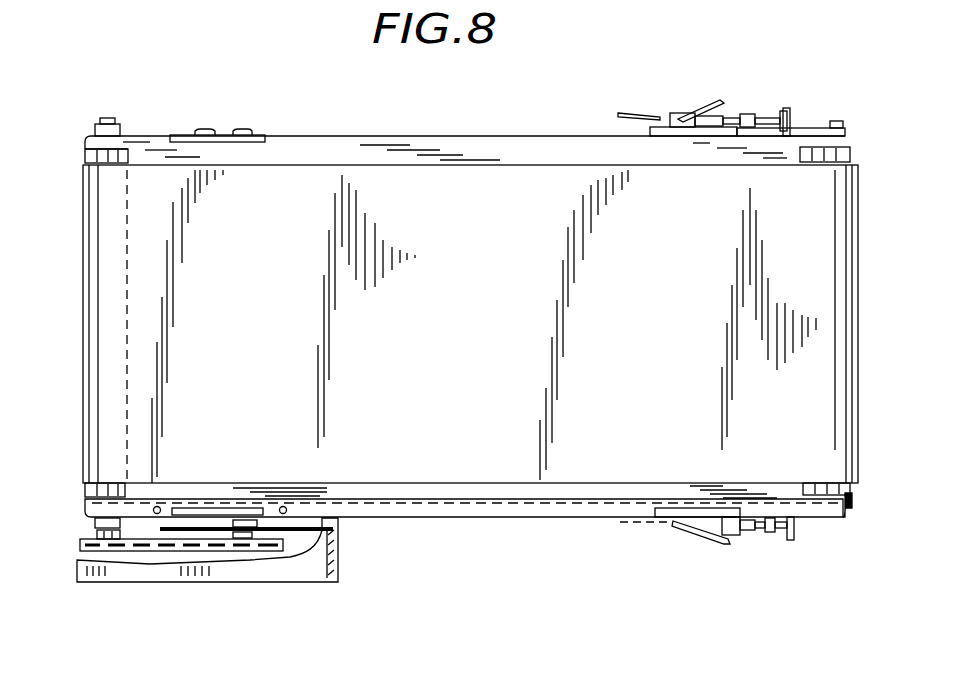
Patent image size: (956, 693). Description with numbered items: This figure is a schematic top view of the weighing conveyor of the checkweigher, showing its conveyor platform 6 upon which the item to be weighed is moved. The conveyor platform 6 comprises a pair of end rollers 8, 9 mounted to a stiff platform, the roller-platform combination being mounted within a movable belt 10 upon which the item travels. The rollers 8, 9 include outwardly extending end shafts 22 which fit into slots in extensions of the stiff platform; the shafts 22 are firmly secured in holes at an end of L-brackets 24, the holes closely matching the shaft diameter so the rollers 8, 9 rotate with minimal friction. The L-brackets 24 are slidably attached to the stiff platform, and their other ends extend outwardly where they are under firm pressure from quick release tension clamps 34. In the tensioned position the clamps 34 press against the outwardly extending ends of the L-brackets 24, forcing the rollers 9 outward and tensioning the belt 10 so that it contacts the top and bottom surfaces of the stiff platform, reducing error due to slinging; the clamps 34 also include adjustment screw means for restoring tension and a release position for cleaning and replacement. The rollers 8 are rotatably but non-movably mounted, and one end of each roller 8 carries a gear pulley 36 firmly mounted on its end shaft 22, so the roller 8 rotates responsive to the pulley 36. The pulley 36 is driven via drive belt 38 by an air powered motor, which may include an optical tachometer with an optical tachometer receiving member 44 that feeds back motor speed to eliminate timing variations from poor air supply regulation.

The conveyor platform 6 is at (549, 112).
The end roller 8 is at (76, 136).
The end roller 9 is at (867, 499).
The movable belt 10 is at (323, 197).
The end shaft 22 is at (851, 137).
The L-bracket 24 is at (809, 121).
The quick release tension clamp 34 is at (739, 538).
The gear pulley 36 is at (84, 534).
The drive belt 38 is at (210, 555).
The optical tachometer receiving member 44 is at (334, 531).